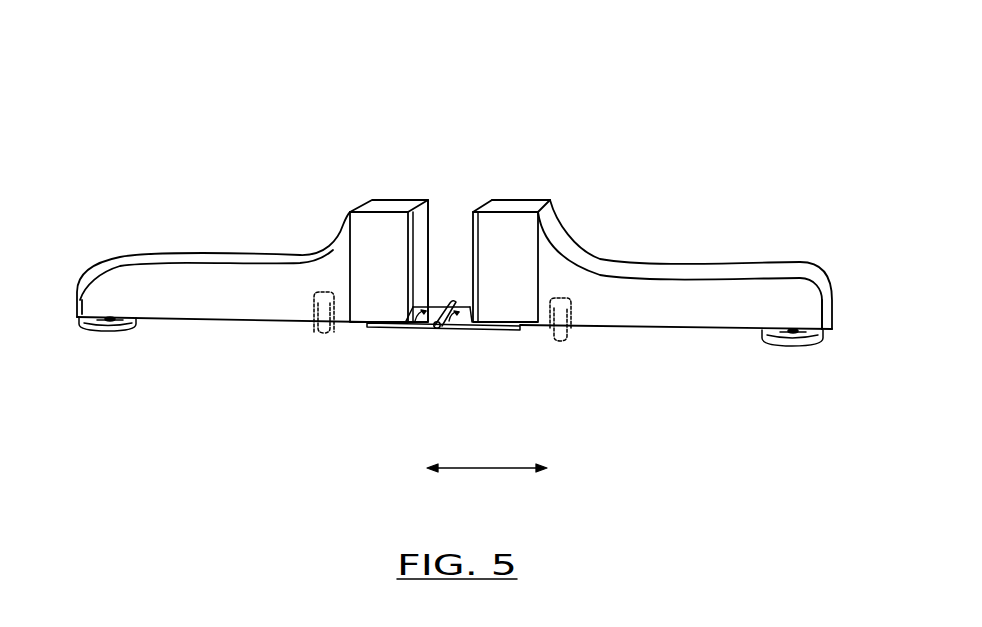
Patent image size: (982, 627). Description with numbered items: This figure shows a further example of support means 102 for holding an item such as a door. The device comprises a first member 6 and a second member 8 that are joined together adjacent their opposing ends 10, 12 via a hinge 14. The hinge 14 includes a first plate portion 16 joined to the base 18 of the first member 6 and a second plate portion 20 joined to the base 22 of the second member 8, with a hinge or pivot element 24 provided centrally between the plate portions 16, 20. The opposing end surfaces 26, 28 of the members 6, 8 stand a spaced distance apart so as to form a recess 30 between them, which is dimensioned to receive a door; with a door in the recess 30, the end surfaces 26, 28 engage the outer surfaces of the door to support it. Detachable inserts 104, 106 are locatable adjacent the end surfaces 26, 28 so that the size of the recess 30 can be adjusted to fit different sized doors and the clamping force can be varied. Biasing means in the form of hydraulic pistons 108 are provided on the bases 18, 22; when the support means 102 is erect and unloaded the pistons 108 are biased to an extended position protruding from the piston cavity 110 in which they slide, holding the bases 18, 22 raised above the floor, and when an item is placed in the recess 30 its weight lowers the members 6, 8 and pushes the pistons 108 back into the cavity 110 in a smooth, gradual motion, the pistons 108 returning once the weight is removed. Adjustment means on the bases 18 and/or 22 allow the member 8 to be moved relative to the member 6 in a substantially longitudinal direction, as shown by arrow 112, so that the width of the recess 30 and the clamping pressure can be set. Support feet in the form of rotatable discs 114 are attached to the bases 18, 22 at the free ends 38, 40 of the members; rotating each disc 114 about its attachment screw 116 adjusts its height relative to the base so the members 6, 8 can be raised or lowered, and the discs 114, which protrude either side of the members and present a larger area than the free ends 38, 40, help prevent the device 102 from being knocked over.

The support means 102 is at (511, 122).
The detachable insert 104 is at (444, 274).
The recess 30 is at (440, 214).
The end surface 28 is at (527, 204).
The first member 6 is at (385, 206).
The end surface 26 is at (410, 204).
The hinge or pivot element 24 is at (450, 292).
The detachable insert 106 is at (488, 207).
The second member 8 is at (543, 199).
The free end 38 is at (78, 298).
The free end 40 is at (830, 313).
The attachment screw 116 is at (107, 322).
The rotatable disc 114 is at (130, 333).
The piston cavity 110 is at (258, 320).
The hydraulic piston 108 is at (318, 330).
The base 18 is at (350, 327).
The end 10 is at (398, 328).
The first plate portion 16 is at (422, 330).
The hinge 14 is at (435, 331).
The second plate portion 20 is at (447, 323).
The end 12 is at (480, 327).
The base 22 is at (672, 330).
The arrow 112 is at (484, 470).